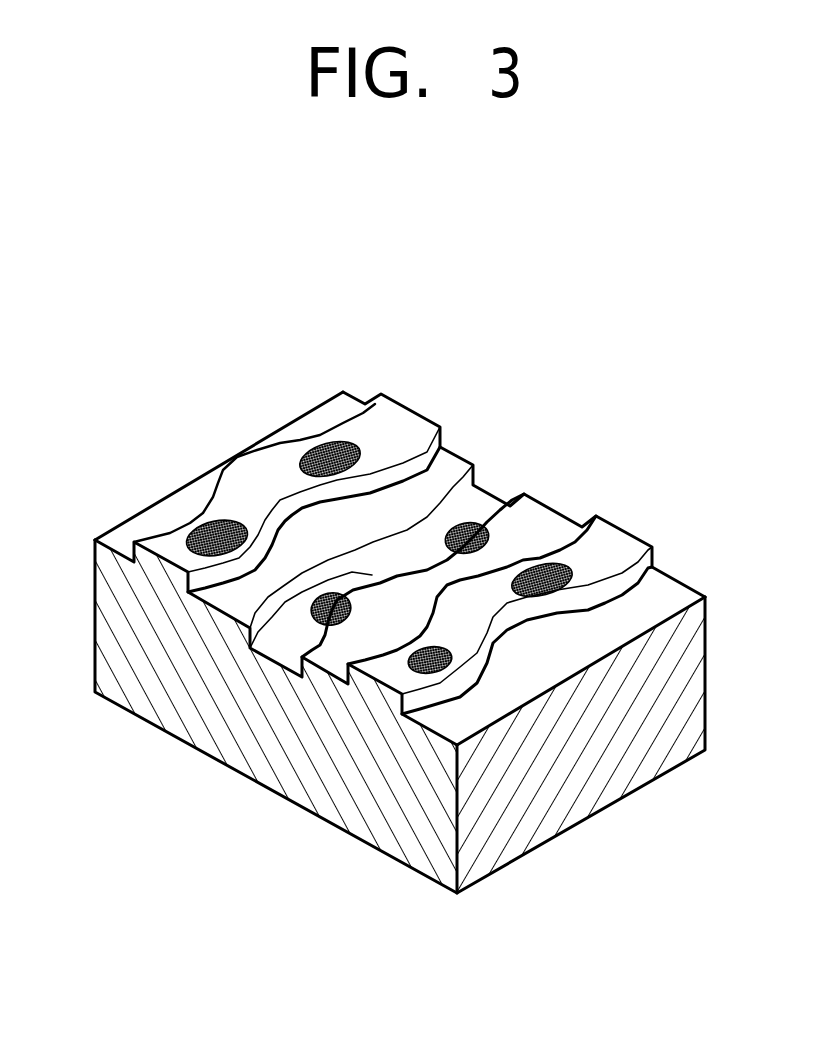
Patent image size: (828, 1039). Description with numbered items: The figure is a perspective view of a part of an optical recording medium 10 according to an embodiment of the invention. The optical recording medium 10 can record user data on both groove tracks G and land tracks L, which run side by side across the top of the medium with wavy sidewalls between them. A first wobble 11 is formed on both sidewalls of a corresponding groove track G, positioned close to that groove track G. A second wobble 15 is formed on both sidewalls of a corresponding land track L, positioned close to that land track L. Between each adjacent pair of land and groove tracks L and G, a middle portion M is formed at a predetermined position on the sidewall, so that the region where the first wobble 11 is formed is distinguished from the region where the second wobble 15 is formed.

The optical recording medium 10 is at (389, 576).
The first wobble 11 is at (303, 666).
The second wobble 15 is at (350, 664).
The land track L is at (416, 602).
The middle portion M is at (445, 470).
The groove track G is at (340, 616).